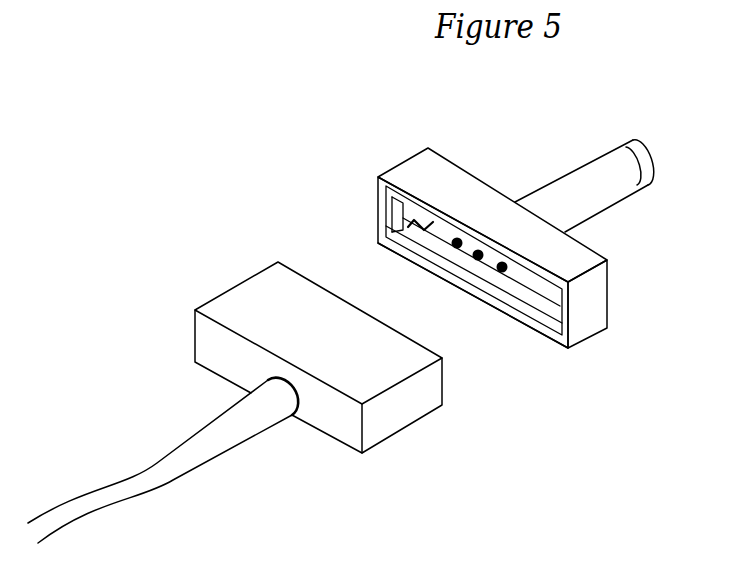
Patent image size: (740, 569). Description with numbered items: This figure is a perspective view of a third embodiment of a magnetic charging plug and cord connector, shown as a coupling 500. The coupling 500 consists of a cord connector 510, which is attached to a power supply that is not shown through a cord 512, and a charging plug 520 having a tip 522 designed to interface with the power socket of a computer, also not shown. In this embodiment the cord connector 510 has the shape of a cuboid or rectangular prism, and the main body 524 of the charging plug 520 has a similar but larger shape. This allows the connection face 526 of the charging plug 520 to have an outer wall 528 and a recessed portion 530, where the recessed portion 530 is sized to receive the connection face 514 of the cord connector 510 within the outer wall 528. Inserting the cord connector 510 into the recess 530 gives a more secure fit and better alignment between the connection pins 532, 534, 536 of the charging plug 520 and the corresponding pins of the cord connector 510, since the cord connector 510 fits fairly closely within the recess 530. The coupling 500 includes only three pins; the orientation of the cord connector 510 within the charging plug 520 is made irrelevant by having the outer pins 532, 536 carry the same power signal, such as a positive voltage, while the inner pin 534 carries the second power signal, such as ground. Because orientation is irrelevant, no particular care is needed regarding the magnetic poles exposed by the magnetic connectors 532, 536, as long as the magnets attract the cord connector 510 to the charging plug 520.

The coupling 500 is at (165, 153).
The cord connector 510 is at (232, 305).
The cord 512 is at (155, 470).
The connection face 514 is at (306, 262).
The charging plug 520 is at (447, 178).
The tip 522 is at (615, 150).
The main body 524 is at (585, 335).
The connection face 526 is at (360, 217).
The outer wall 528 is at (555, 342).
The recessed portion 530 is at (408, 226).
The connection pin 532 is at (452, 250).
The connection pin 534 is at (477, 262).
The connection pin 536 is at (505, 273).